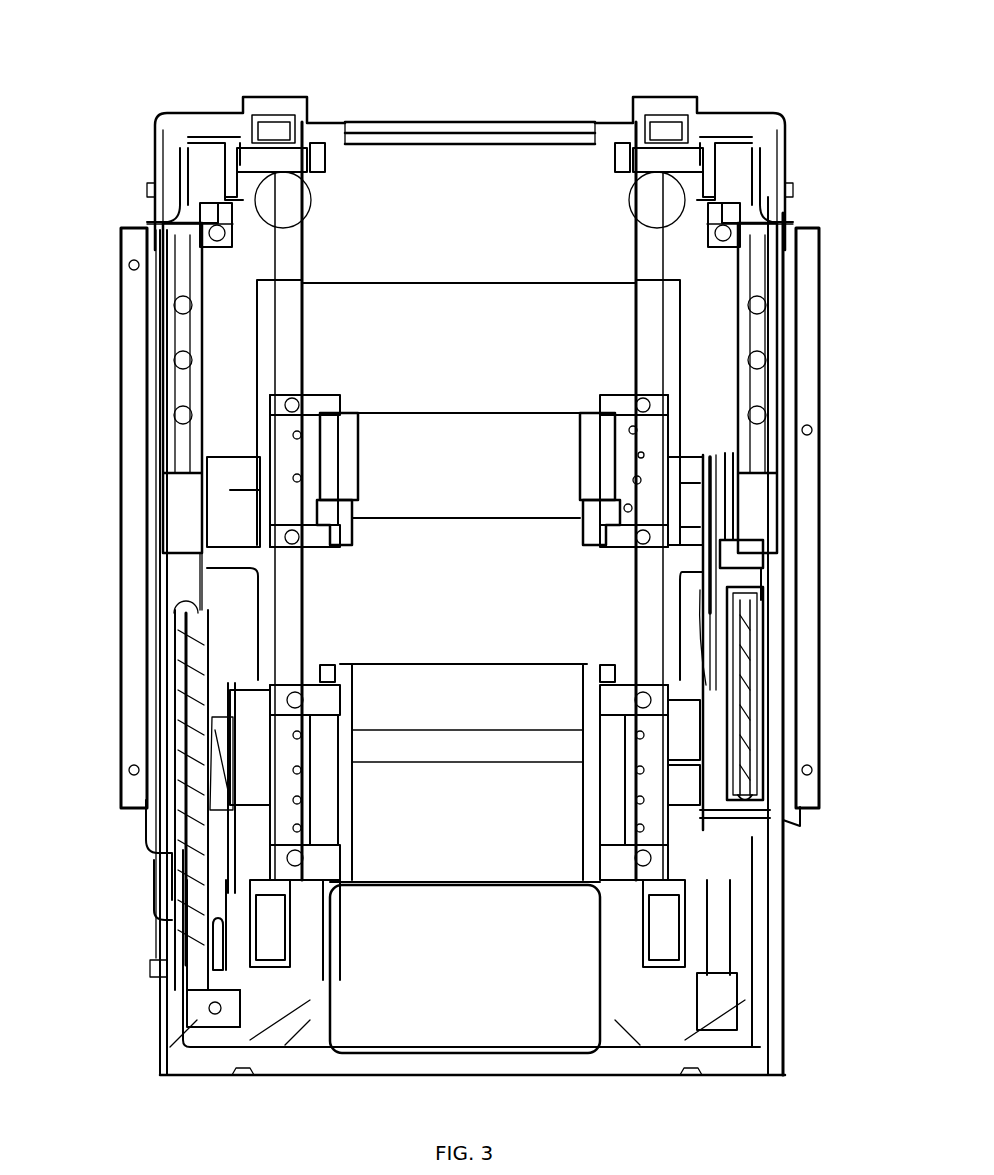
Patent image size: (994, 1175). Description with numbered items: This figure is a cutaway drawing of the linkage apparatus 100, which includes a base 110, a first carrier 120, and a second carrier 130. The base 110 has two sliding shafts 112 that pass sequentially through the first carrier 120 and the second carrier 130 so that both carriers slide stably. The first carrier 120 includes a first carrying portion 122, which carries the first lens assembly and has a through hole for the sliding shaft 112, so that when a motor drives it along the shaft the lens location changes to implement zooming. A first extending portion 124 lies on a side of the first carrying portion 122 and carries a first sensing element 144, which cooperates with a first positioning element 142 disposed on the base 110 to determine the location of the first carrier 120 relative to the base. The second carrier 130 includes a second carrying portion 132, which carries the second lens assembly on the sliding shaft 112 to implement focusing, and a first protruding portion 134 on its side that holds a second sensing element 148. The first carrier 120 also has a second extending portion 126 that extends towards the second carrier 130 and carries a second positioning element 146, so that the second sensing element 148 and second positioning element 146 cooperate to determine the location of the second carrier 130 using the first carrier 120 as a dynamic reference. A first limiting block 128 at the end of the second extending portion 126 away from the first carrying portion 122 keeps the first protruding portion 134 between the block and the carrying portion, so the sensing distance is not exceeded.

The linkage apparatus 100 is at (507, 68).
The base 110 is at (197, 992).
The sliding shaft 112 is at (292, 262).
The first carrier 120 is at (465, 687).
The first carrying portion 122 is at (302, 657).
The first extending portion 124 is at (225, 722).
The second extending portion 126 is at (750, 690).
The first limiting block 128 is at (743, 545).
The second carrier 130 is at (467, 437).
The second carrying portion 132 is at (292, 400).
The first protruding portion 134 is at (708, 665).
The first positioning element 142 is at (200, 870).
The first sensing element 144 is at (217, 940).
The second positioning element 146 is at (738, 775).
The second sensing element 148 is at (722, 645).